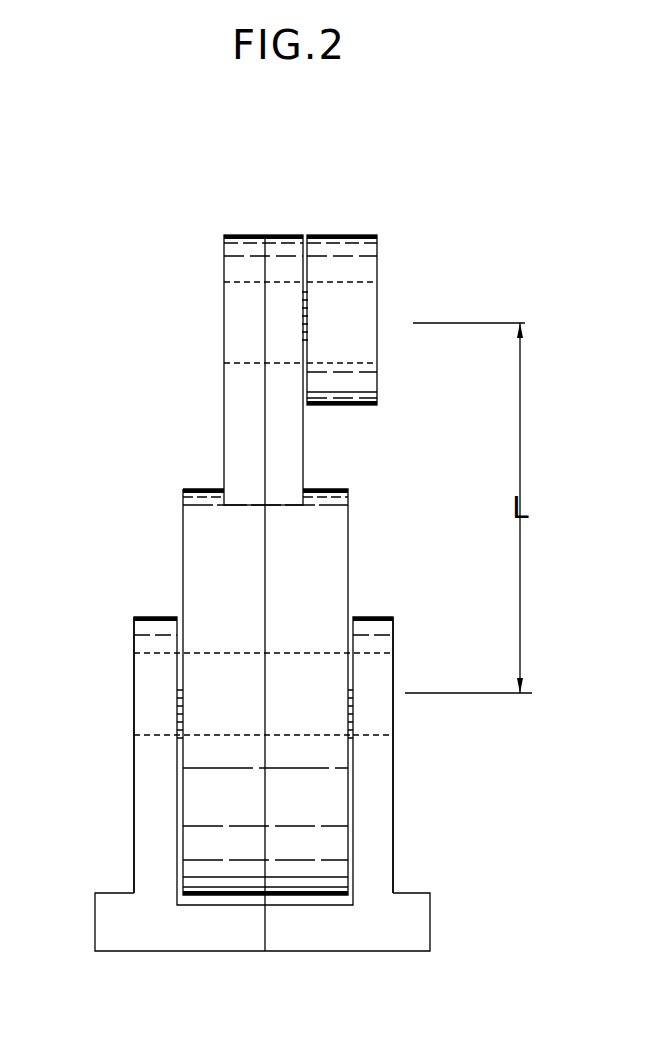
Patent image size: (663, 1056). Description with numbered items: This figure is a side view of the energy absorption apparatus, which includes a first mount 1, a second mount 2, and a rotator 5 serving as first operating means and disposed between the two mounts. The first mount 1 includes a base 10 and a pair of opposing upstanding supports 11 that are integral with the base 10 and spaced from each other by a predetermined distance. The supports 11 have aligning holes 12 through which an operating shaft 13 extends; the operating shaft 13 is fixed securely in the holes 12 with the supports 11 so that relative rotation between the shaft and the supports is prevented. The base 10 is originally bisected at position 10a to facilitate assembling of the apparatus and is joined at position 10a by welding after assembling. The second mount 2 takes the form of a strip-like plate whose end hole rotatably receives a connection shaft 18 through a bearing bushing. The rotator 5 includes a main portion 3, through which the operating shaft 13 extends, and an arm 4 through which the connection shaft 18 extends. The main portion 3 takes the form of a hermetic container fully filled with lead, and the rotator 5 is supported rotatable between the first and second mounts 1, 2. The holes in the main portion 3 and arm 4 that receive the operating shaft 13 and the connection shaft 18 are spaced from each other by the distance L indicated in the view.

The first mount 1 is at (128, 658).
The second mount 2 is at (382, 267).
The main portion 3 is at (322, 545).
The arm 4 is at (290, 437).
The rotator 5 is at (415, 428).
The base 10 is at (388, 940).
The bisection position 10a is at (268, 925).
The upstanding supports 11 is at (145, 802).
The aligning holes 12 is at (368, 737).
The operating shaft 13 is at (352, 688).
The connection shaft 18 is at (305, 320).